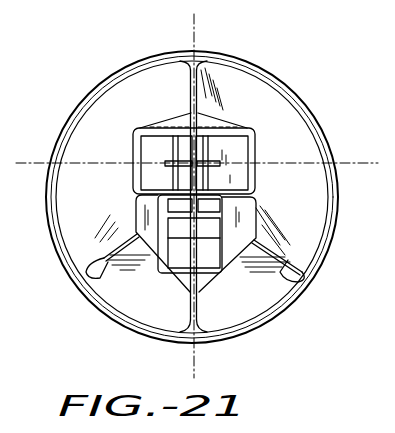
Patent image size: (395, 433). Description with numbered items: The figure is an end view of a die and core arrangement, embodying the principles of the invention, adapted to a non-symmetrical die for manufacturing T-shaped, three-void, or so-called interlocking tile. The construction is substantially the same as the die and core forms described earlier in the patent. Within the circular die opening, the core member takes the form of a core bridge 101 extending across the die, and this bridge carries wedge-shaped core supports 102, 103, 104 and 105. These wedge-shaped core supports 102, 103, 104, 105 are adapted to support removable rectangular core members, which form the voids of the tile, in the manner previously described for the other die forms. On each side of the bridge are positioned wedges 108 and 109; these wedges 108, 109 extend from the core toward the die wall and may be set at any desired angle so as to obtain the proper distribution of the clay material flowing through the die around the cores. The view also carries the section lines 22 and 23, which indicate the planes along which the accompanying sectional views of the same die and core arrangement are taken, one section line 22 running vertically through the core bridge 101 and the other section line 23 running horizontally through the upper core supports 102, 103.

The section line 22- 22 is at (198, 32).
The section line 23- 23 is at (32, 175).
The core bridge 101 is at (212, 116).
The wedge-shaped core support 102 is at (150, 146).
The wedge-shaped core support 103 is at (244, 152).
The wedge-shaped core support 104 is at (222, 208).
The wedge-shaped core support 105 is at (207, 258).
The wedge 108 is at (103, 268).
The wedge 109 is at (305, 276).